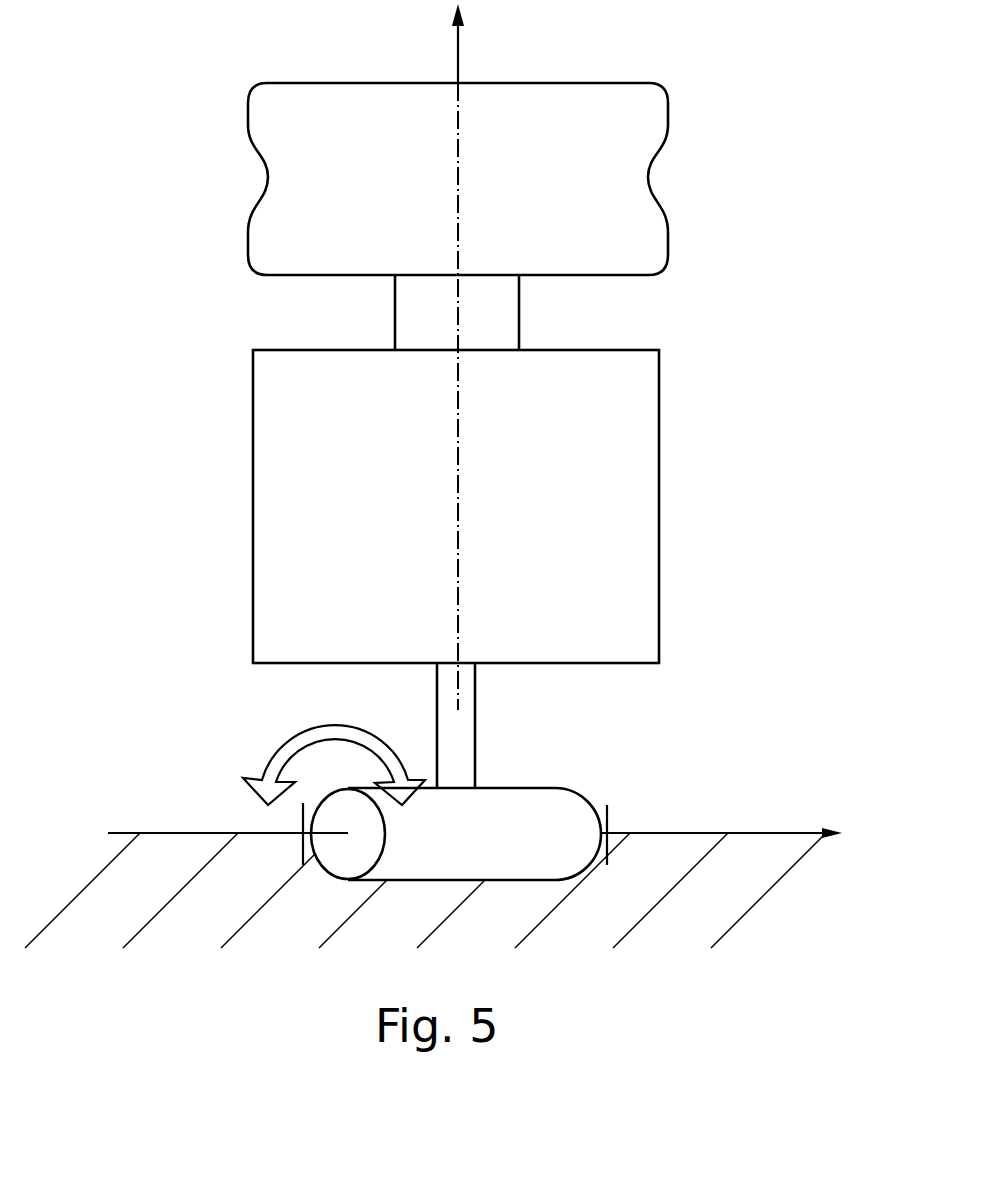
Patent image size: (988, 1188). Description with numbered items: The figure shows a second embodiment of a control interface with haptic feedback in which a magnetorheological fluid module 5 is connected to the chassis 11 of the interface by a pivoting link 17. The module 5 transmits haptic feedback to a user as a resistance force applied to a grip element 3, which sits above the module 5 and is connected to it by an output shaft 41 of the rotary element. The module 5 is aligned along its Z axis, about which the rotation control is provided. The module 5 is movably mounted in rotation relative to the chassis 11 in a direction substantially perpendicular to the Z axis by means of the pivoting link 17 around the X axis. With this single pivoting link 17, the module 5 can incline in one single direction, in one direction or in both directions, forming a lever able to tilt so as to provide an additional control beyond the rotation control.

The grip element 3 is at (636, 205).
The output shaft 41 is at (507, 317).
The magnetorheological fluid module 5 is at (642, 518).
The Z axis Z is at (455, 515).
The pivoting link 17 is at (634, 771).
The chassis 11 is at (757, 853).
The X axis X is at (485, 839).